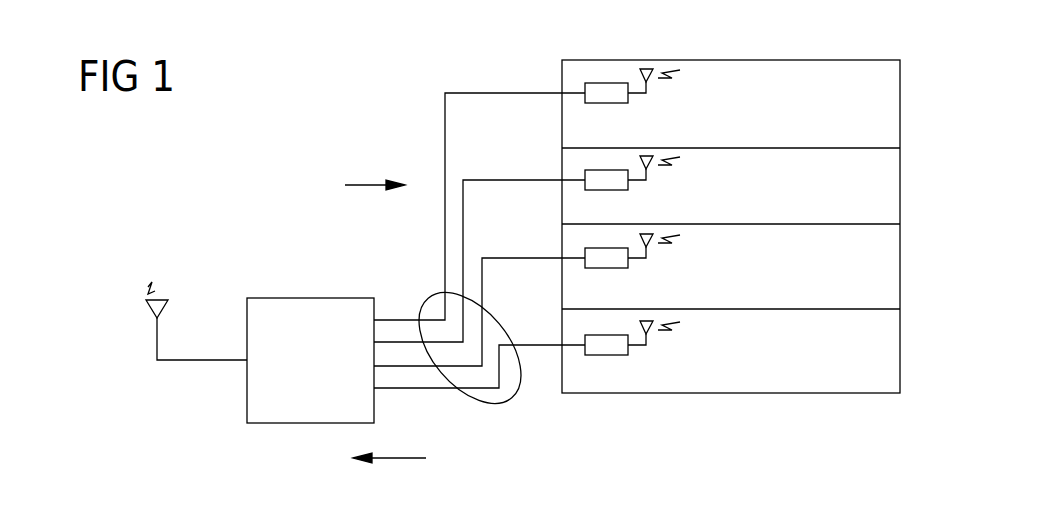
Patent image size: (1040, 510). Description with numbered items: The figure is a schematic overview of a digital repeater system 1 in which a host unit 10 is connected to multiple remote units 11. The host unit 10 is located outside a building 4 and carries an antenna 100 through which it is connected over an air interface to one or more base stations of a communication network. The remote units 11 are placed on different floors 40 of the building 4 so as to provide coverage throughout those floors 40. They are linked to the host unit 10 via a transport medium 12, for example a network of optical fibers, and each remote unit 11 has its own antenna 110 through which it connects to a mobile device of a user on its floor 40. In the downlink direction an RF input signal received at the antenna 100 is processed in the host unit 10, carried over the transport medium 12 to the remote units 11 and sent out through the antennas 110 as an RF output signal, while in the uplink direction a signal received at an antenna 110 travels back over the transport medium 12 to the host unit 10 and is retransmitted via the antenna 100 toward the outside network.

The digital repeater system 1 is at (452, 435).
The building 4 is at (775, 395).
The host unit 10 is at (300, 400).
The remote units 11 is at (606, 88).
The transport medium 12 is at (430, 298).
The floors 40 is at (888, 103).
The antenna 100 is at (147, 310).
The antenna 110 is at (648, 68).